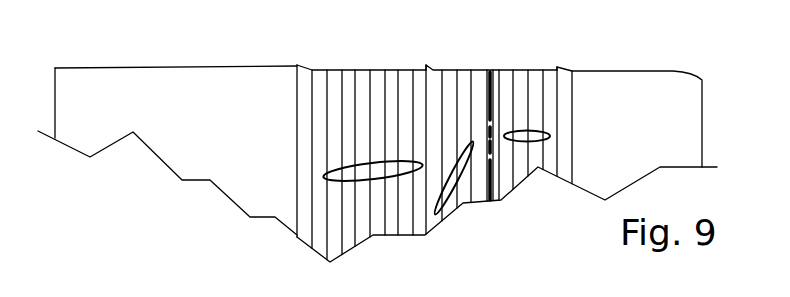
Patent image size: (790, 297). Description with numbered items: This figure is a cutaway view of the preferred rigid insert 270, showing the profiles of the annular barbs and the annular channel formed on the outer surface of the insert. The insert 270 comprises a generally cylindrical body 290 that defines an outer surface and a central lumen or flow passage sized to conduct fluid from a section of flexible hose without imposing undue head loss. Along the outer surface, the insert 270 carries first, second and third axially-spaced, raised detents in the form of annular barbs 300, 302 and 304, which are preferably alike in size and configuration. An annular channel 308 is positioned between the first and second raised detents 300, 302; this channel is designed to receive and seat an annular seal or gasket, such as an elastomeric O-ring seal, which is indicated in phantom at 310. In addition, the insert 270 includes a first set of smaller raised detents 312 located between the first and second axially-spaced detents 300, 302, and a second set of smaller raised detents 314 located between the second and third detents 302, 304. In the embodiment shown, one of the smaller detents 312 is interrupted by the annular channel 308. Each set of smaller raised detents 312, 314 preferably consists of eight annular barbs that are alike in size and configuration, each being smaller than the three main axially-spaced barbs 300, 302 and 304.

The insert 270 is at (438, 227).
The cylindrical body 290 is at (167, 150).
The first annular barb 300 is at (632, 119).
The second annular barb 302 is at (491, 126).
The third annular barb 304 is at (313, 162).
The annular channel 308 is at (554, 112).
The O-ring seal 310 is at (546, 169).
The first set of smaller raised detents 312 is at (441, 222).
The second set of smaller raised detents 314 is at (298, 194).